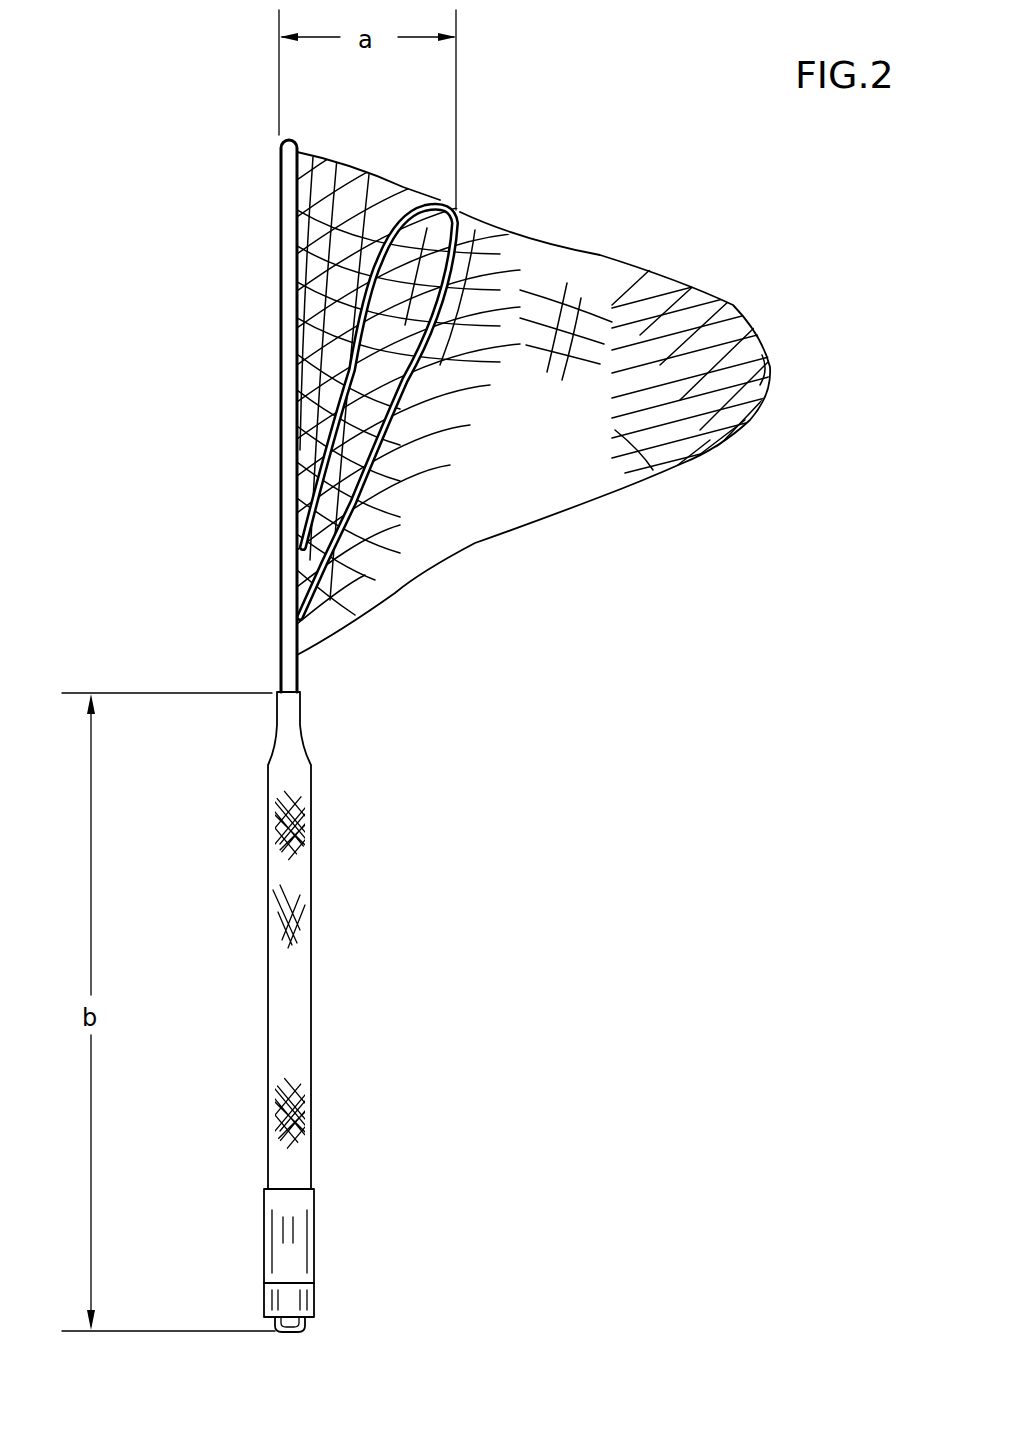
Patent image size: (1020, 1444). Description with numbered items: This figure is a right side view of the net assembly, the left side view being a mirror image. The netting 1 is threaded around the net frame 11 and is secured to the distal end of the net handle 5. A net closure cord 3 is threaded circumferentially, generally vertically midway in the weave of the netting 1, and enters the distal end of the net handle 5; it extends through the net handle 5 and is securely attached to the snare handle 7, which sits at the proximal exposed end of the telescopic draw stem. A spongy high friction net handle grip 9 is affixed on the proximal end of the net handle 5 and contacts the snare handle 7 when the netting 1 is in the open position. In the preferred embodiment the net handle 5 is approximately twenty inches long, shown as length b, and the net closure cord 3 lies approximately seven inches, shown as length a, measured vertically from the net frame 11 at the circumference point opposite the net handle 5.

The netting 1 is at (688, 298).
The net closure cord 3 is at (282, 421).
The net handle 5 is at (312, 947).
The snare handle 7 is at (313, 1297).
The net handle grip 9 is at (315, 1218).
The net frame 11 is at (280, 272).